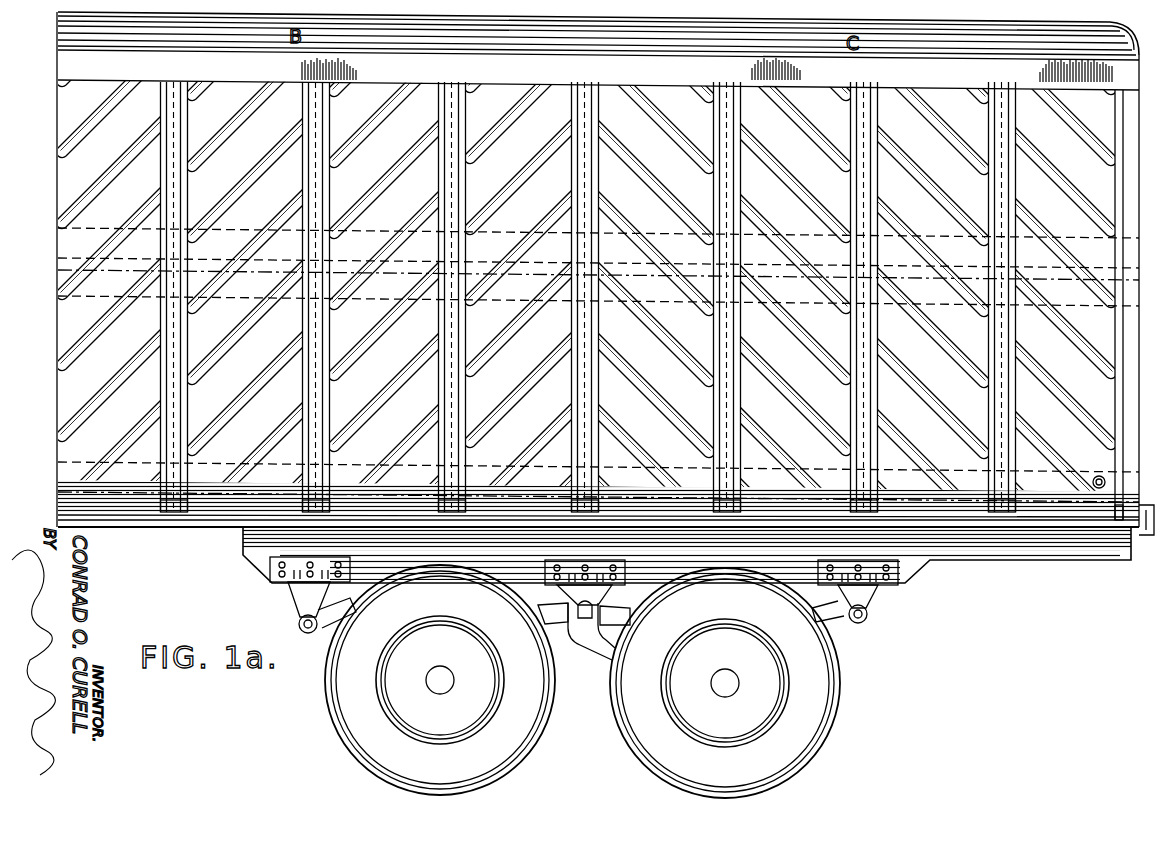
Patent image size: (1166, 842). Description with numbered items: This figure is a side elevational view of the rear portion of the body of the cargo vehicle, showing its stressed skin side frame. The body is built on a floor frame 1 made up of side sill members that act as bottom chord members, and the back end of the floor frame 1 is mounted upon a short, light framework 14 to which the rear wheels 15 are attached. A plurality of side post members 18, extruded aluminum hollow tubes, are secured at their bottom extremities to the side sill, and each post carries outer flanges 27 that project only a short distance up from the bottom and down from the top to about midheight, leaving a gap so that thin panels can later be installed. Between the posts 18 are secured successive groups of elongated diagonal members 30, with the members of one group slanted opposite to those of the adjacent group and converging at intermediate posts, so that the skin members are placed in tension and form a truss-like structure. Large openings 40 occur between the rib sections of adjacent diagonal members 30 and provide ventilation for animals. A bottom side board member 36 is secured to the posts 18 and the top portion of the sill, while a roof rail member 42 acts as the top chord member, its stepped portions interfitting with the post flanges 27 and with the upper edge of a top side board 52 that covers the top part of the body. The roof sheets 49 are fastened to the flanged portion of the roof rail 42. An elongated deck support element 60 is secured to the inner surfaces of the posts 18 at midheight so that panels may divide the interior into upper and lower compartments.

The floor frame 1 is at (148, 529).
The framework 14 is at (946, 562).
The rear wheels 15 is at (618, 742).
The side post members 18 is at (184, 514).
The outer flanges 27 is at (188, 237).
The diagonal members 30 is at (213, 100).
The bottom side board member 36 is at (92, 483).
The openings 40 is at (110, 165).
The roof rail member 42 is at (535, 42).
The roof sheets 49 is at (60, 14).
The top side board 52 is at (526, 82).
The deck support element 60 is at (64, 283).